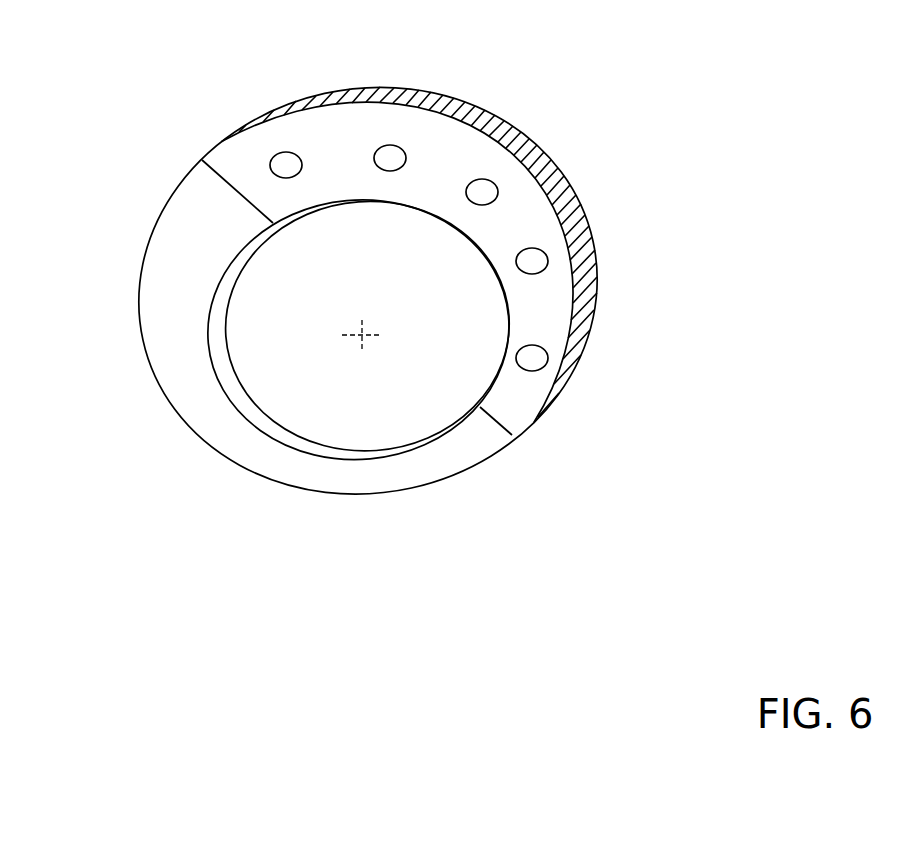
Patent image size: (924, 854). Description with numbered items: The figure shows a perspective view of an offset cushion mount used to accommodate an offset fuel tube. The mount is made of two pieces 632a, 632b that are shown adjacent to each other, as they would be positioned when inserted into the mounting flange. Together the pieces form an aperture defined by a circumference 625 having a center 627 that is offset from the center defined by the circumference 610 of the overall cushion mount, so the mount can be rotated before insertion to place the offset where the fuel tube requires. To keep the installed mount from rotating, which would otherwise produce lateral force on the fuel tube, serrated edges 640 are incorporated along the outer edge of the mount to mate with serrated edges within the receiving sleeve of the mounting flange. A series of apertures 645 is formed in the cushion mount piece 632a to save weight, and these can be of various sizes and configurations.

The circumference of the overall cushion mount 610 is at (155, 218).
The circumference 625 is at (213, 362).
The center 627 is at (378, 325).
The cushion mount piece 632a is at (543, 298).
The cushion mount piece 632b is at (317, 474).
The serrated edges 640 is at (408, 97).
The apertures 645 is at (390, 157).